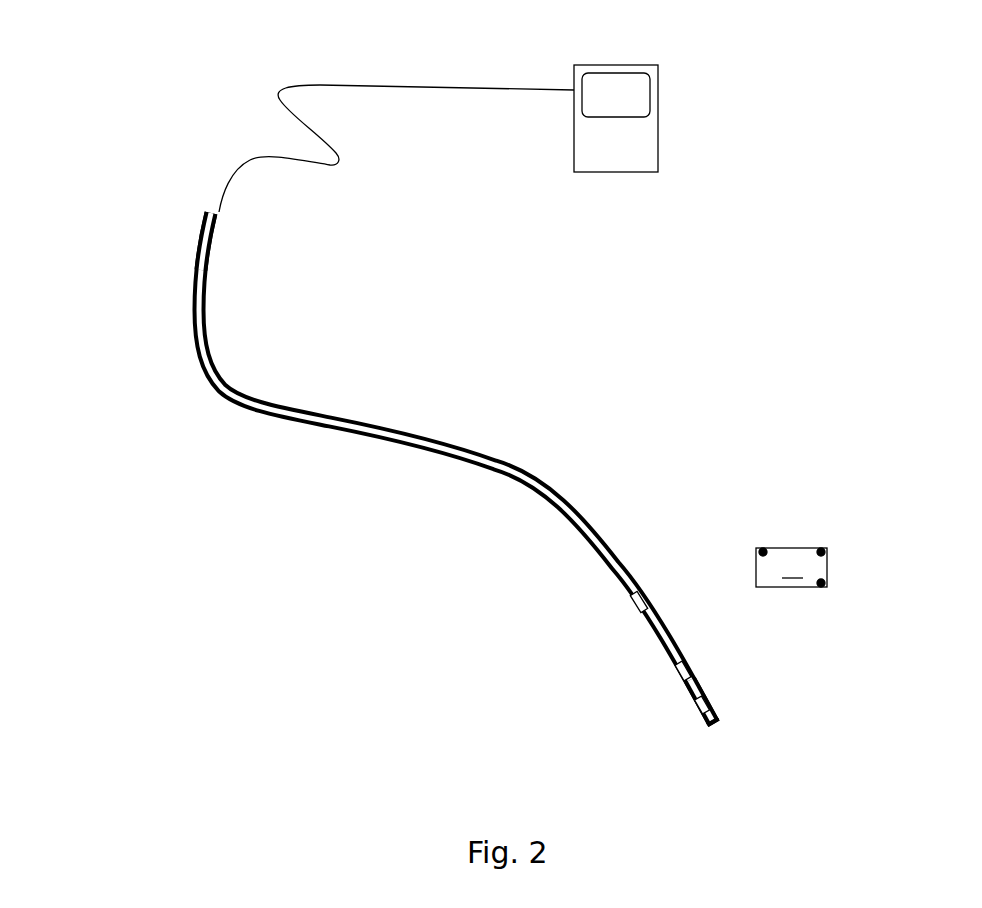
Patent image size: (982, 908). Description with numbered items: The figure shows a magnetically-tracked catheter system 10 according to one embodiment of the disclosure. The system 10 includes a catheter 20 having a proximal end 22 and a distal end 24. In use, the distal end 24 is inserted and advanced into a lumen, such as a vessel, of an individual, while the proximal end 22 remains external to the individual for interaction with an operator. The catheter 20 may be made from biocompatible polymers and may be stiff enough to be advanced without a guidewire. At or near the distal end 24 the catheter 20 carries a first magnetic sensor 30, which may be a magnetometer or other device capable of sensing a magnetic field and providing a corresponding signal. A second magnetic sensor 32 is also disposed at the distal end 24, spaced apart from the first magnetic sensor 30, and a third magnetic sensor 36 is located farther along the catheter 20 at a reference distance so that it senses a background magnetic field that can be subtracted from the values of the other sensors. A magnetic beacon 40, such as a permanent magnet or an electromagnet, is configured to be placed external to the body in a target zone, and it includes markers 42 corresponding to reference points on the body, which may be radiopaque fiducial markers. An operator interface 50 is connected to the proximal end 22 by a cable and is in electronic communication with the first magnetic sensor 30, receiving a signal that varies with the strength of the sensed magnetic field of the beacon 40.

The magnetically-tracked catheter system 10 is at (99, 50).
The catheter 20 is at (403, 428).
The proximal end 22 is at (236, 213).
The distal end 24 is at (728, 732).
The first magnetic sensor 30 is at (697, 707).
The second magnetic sensor 32 is at (678, 676).
The third magnetic sensor 36 is at (634, 608).
The magnetic beacon 40 is at (791, 567).
The markers 42 is at (819, 550).
The operator interface 50 is at (658, 121).